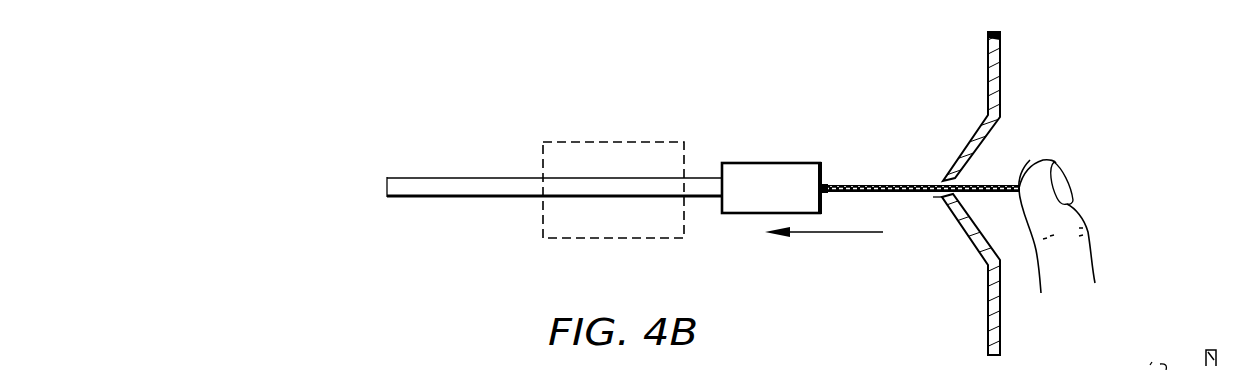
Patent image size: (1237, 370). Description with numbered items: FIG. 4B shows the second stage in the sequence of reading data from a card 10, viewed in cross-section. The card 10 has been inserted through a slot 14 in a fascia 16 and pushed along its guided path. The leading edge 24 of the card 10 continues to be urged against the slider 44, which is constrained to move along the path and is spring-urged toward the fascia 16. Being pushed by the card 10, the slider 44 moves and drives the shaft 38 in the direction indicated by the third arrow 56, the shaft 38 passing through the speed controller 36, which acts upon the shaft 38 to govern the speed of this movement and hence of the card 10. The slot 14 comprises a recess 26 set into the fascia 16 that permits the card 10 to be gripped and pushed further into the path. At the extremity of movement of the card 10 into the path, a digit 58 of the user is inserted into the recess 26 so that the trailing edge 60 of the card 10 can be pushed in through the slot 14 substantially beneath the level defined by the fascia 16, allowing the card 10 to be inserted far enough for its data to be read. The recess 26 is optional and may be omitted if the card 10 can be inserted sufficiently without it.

The card 10 is at (905, 185).
The slot 14 is at (935, 197).
The fascia 16 is at (992, 67).
The leading edge 24 is at (826, 181).
The recess 26 is at (979, 157).
The speed controller 36 is at (596, 233).
The shaft 38 is at (481, 188).
The slider 44 is at (776, 173).
The third arrow 56 is at (838, 233).
The digit 58 is at (1088, 230).
The trailing edge 60 is at (1030, 160).